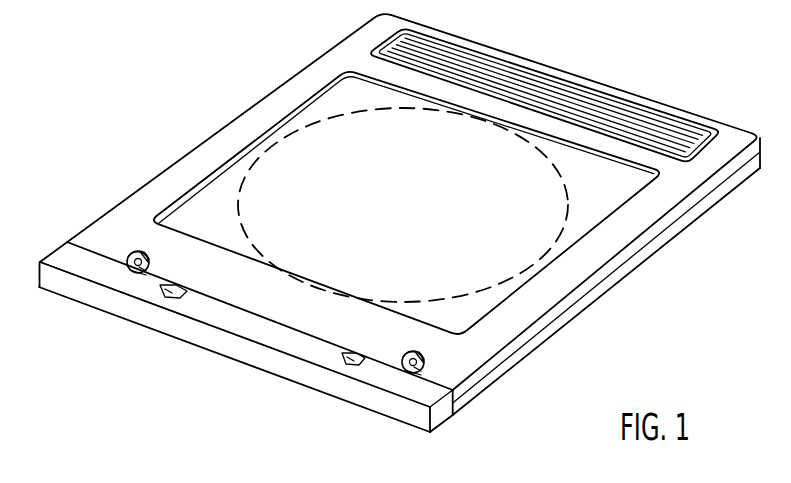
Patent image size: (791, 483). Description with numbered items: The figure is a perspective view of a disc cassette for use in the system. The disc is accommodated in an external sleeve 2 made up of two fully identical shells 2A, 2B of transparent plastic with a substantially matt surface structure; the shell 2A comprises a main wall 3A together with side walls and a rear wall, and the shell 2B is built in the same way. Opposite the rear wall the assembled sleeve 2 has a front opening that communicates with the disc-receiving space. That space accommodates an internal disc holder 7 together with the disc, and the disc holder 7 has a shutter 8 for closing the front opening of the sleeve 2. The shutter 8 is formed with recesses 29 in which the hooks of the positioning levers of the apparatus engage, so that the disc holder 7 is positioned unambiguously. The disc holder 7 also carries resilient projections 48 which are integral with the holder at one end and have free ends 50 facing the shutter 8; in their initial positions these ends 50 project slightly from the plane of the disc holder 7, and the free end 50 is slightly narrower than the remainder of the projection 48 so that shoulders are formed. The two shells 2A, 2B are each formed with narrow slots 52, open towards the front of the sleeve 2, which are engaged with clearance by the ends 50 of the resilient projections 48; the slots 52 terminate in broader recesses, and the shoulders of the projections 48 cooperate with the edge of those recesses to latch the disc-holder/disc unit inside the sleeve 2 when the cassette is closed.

The external sleeve 2 is at (485, 61).
The shell 2A is at (568, 275).
The shell 2B is at (553, 337).
The main wall 3A is at (277, 120).
The disc holder 7 is at (441, 425).
The shutter 8 is at (62, 280).
The recesses 29 is at (168, 291).
The resilient projections 48 is at (148, 259).
The free ends 50 is at (132, 266).
The slots 52 is at (122, 257).